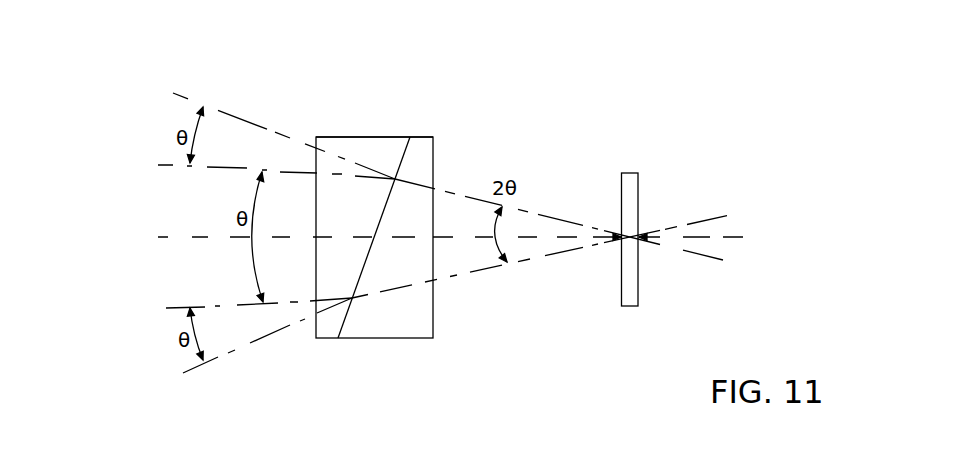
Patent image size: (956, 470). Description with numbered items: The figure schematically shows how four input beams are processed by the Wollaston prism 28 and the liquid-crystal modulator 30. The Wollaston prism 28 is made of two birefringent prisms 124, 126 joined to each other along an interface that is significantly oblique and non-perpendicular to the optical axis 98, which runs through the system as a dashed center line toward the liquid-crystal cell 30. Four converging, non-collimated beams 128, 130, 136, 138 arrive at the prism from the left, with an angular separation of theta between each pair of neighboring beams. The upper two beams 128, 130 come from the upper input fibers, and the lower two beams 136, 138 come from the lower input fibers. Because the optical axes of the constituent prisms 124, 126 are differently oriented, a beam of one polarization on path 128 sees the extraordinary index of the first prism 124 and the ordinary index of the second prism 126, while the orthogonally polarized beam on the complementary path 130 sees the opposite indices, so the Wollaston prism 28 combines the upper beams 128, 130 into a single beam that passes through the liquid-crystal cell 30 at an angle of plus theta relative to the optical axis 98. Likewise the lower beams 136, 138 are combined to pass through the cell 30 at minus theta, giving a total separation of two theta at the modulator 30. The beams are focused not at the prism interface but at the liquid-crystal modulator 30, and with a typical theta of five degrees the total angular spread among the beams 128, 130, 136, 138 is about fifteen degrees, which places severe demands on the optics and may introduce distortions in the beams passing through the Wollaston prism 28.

The Wollaston prism 28 is at (421, 363).
The first birefringent prism 124 is at (352, 145).
The second birefringent prism 126 is at (423, 302).
The liquid-crystal modulator 30 is at (632, 175).
The optical axis 98 is at (200, 238).
The first beam path 128 is at (173, 97).
The second beam path 130 is at (172, 167).
The third beam 136 is at (170, 309).
The fourth beam 138 is at (189, 374).